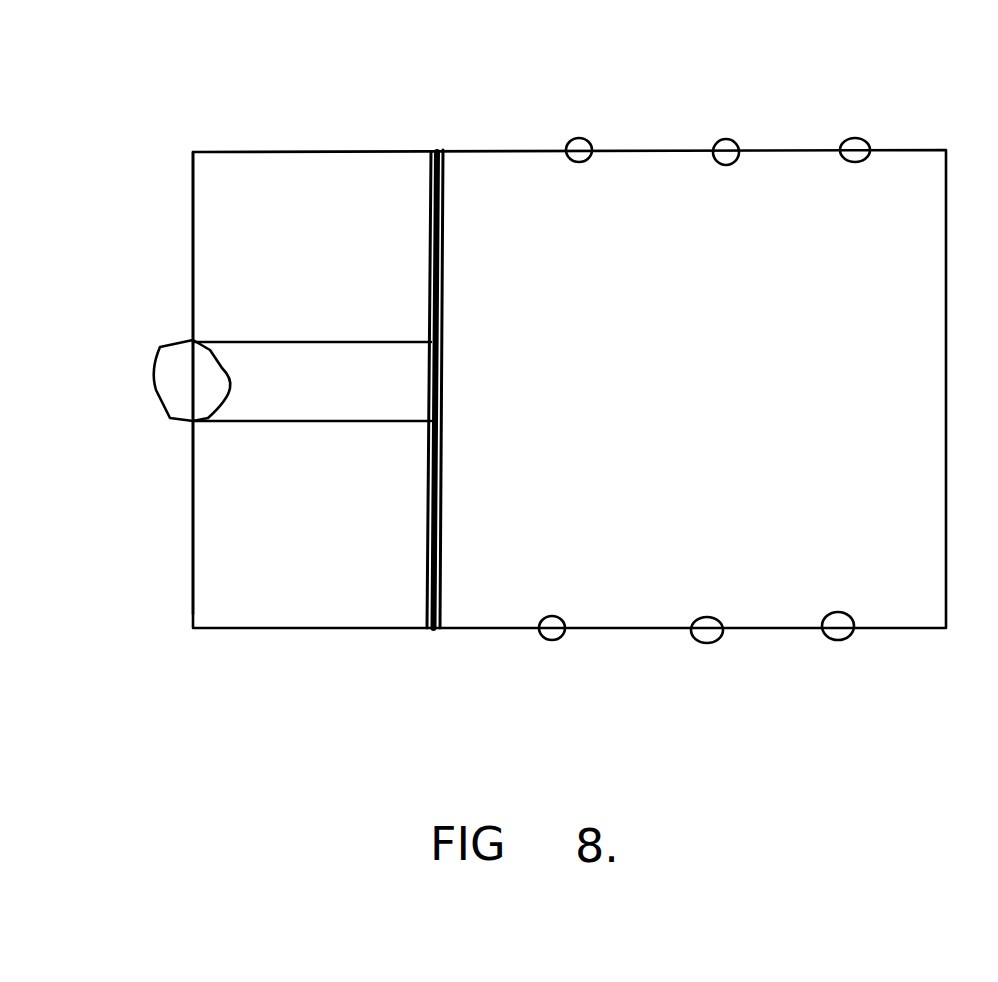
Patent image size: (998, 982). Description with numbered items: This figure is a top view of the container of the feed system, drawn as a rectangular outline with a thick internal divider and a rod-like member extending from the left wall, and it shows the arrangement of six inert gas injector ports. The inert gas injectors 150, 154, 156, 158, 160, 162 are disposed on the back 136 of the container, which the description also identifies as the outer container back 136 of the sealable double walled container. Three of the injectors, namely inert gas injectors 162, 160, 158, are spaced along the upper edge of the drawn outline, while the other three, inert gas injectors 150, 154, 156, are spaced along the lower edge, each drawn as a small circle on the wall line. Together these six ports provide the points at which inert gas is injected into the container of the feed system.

The outer container back 136 is at (170, 390).
The inert gas injector 150 is at (549, 641).
The inert gas injector 154 is at (707, 644).
The inert gas injector 156 is at (837, 642).
The inert gas injector 158 is at (870, 122).
The inert gas injector 160 is at (727, 138).
The inert gas injector 162 is at (578, 132).